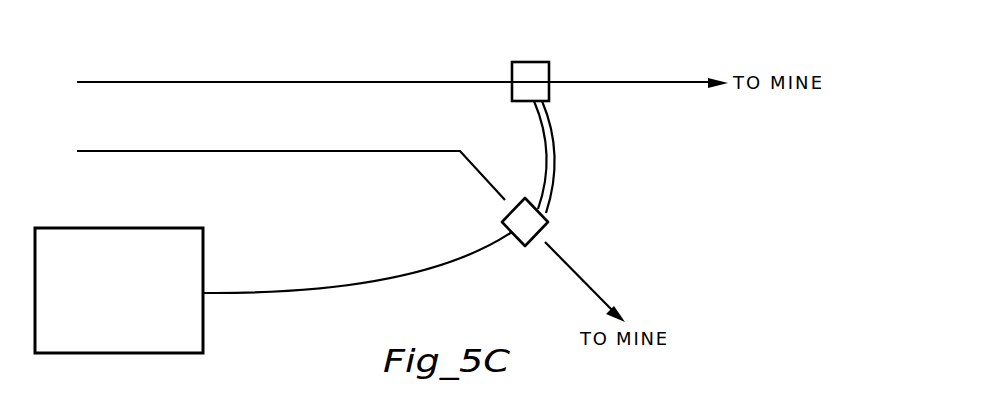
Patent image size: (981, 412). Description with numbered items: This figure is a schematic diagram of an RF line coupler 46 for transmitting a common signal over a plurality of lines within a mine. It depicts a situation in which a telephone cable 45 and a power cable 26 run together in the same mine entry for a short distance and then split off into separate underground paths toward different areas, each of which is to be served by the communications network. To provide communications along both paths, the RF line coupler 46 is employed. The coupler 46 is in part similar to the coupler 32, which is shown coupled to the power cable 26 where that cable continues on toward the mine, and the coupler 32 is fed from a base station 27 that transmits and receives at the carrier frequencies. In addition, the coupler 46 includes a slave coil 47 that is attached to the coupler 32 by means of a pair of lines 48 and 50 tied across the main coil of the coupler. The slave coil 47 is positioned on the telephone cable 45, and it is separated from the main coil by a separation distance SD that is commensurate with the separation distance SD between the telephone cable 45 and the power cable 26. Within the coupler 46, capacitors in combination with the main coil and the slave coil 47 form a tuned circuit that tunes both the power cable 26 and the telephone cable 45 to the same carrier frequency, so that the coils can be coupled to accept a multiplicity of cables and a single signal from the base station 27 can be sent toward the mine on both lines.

The telephone cable 45 is at (322, 82).
The slave coil 47 is at (527, 60).
The line 50 is at (549, 128).
The line 48 is at (540, 147).
The separation distance SD is at (553, 137).
The RF line coupler 46 is at (575, 169).
The base station 27 is at (137, 228).
The coupler 32 is at (549, 214).
The power cable 26 is at (595, 290).